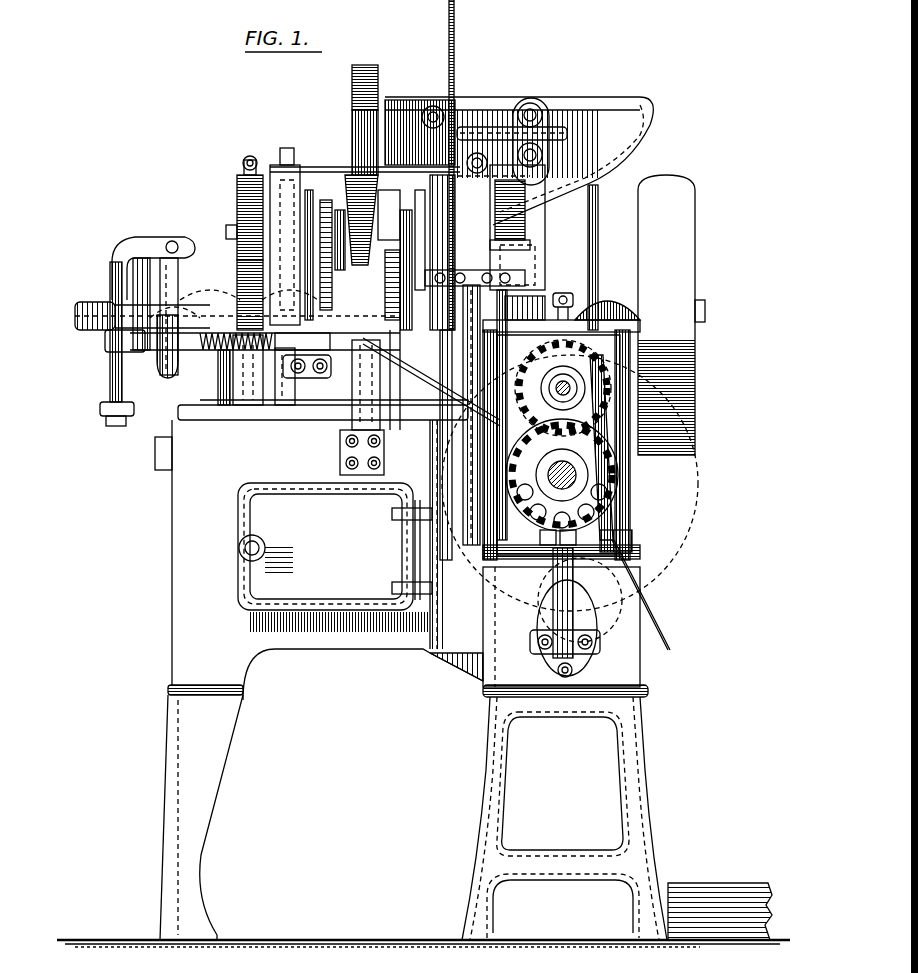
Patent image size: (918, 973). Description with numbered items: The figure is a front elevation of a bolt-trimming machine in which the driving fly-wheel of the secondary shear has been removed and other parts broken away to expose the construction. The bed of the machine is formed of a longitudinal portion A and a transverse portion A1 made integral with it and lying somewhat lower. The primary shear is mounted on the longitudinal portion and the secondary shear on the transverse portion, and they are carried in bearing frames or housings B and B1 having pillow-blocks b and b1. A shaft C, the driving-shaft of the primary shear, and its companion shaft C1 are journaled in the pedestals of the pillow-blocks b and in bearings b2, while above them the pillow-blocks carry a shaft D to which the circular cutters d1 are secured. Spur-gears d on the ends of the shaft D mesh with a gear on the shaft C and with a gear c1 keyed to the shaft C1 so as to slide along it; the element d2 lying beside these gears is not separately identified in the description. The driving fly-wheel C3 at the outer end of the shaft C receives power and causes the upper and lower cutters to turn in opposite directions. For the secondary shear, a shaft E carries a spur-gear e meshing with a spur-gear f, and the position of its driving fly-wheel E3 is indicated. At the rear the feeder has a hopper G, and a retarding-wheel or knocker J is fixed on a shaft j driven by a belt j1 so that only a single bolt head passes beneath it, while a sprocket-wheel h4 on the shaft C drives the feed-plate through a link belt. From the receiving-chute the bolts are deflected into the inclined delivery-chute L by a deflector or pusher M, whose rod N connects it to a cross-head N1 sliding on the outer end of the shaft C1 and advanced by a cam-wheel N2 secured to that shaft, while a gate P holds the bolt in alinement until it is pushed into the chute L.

The longitudinal portion of the bed A is at (172, 630).
The transverse portion of the bed A1 is at (640, 652).
The bearing frame or housing B is at (224, 410).
The bearing frame or housing B1 is at (645, 560).
The delivery or second feed-chute L is at (420, 428).
The deflector or pusher M is at (318, 371).
The gate P is at (461, 422).
The shaft or spindle E is at (600, 480).
The driving fly-wheel E3 is at (690, 492).
The spur-gear e is at (561, 544).
The pillow-blocks b1 is at (640, 534).
The driving fly-wheel C3 is at (678, 183).
The bearings b2 is at (612, 300).
The spur-gears f is at (562, 306).
The shaft or spindle C is at (520, 310).
The sprocket-wheel h4 is at (508, 300).
The hopper G is at (620, 110).
The shaft j is at (483, 110).
The belt j1 is at (455, 48).
The retarding-wheel or knocker J is at (352, 78).
The spur-gears d is at (237, 200).
The spur-gear c1 is at (240, 286).
The pillow-blocks b is at (275, 195).
The shaft sleeve d2 is at (308, 190).
The circular cutters d1 is at (345, 190).
The shaft or spindle D is at (385, 252).
The shaft or spindle C1 is at (75, 318).
The cross-head N1 is at (112, 270).
The rod N is at (104, 344).
The cam-wheel N2 is at (170, 380).